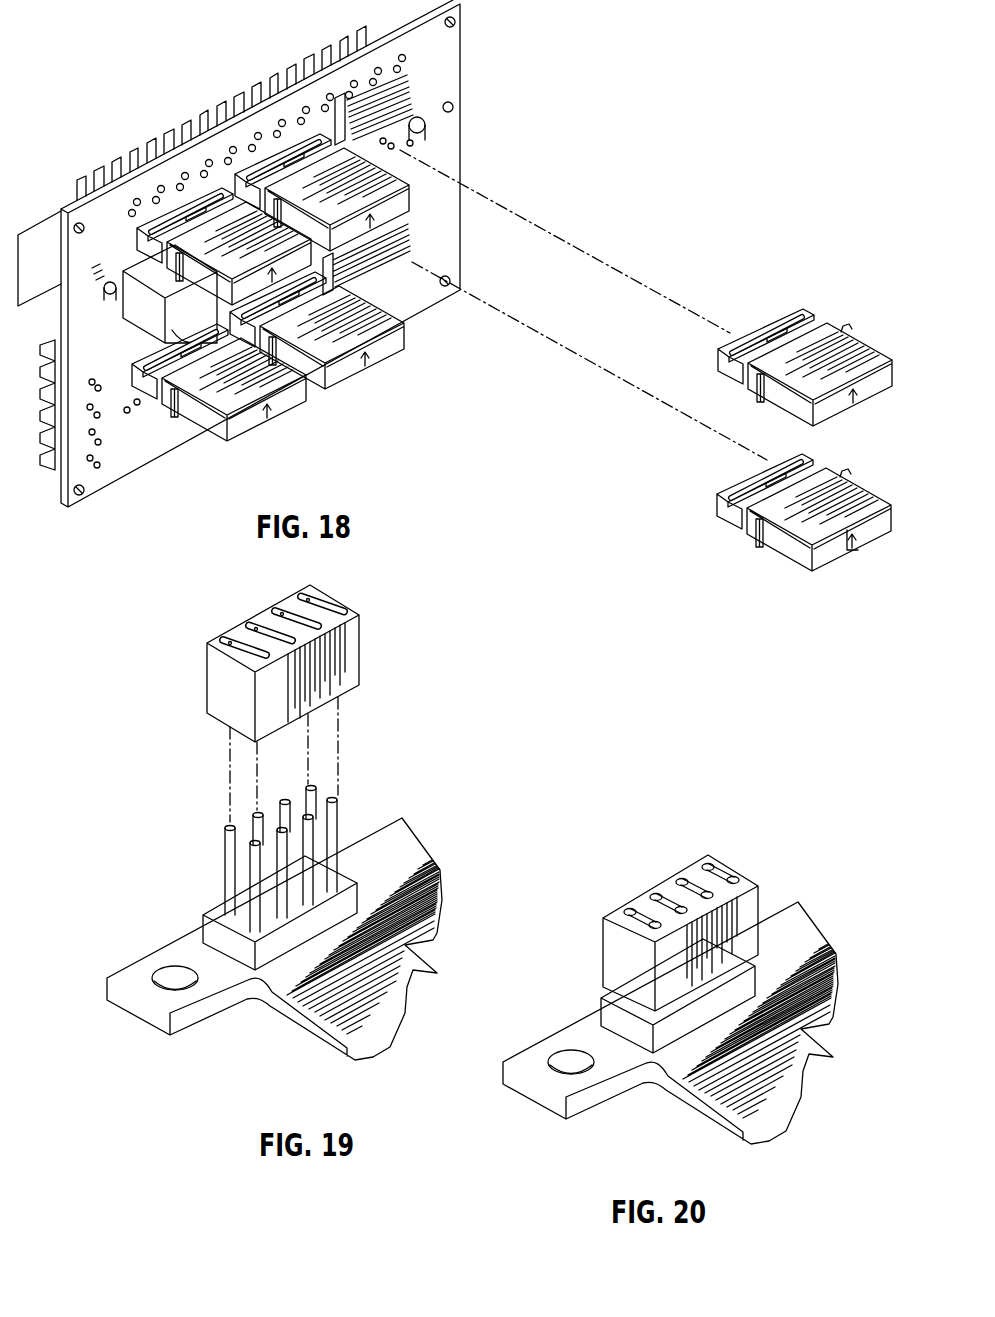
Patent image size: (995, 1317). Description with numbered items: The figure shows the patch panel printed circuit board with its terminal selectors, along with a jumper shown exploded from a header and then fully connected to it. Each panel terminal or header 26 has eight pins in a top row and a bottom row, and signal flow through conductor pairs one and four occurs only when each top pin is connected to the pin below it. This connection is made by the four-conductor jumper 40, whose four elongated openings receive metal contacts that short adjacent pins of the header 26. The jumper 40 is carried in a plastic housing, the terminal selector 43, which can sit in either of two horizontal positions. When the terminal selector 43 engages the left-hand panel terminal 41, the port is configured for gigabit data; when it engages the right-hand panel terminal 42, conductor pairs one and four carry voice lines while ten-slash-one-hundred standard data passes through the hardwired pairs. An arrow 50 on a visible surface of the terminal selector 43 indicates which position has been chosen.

In FIG. 19, the panel terminal 26 is at (205, 913).
In FIG. 20, the panel terminal 26 is at (602, 993).
In FIG. 18, the jumper 40 is at (750, 322).
In FIG. 19, the jumper 40 is at (237, 623).
In FIG. 20, the jumper 40 is at (637, 897).
In FIG. 18, the left-hand panel terminal 41 is at (347, 117).
In FIG. 18, the right-hand panel terminal 42 is at (400, 258).
In FIG. 18, the terminal selector 43 is at (852, 327).
In FIG. 18, the arrow 50 is at (862, 532).